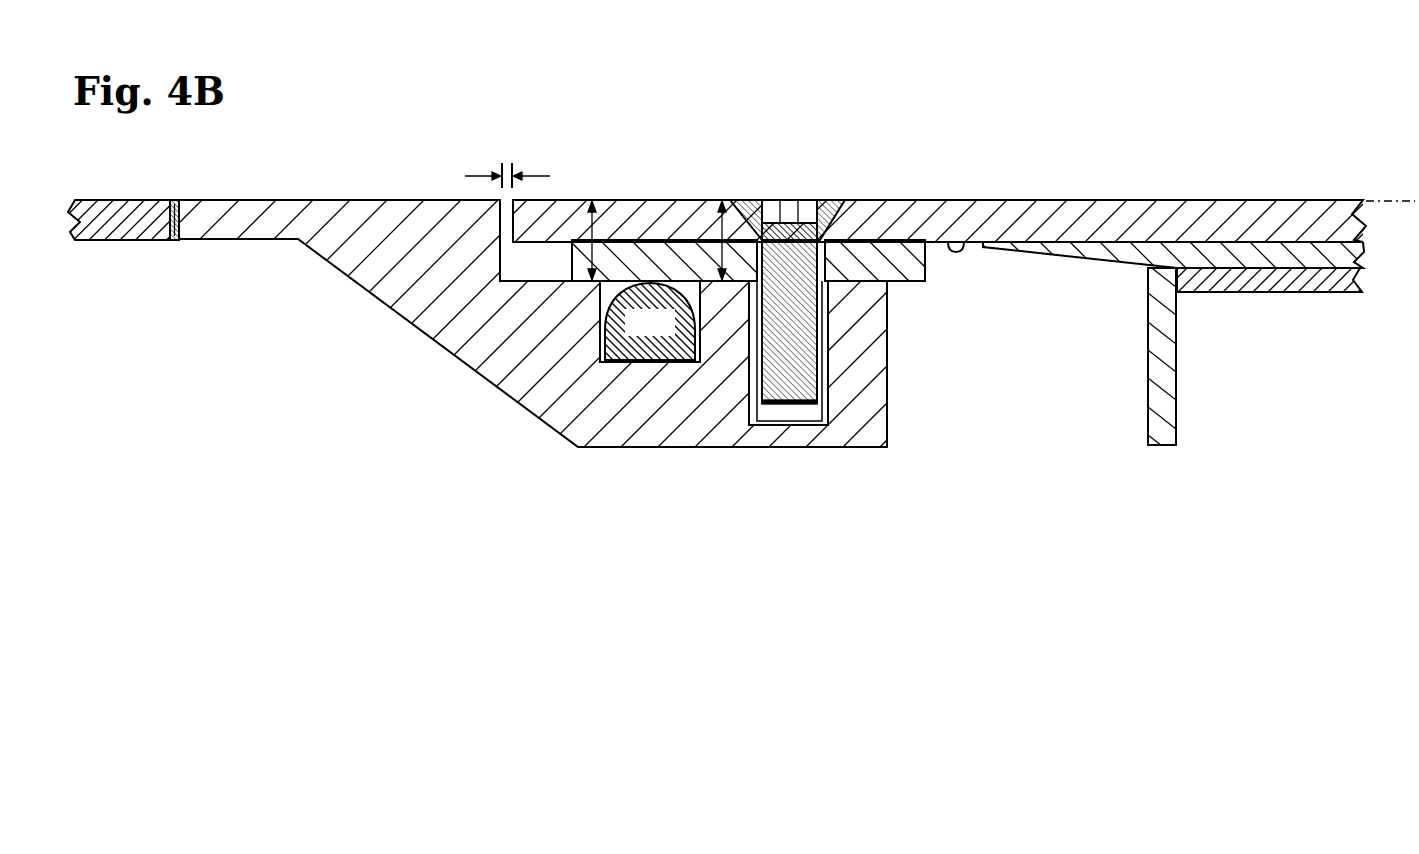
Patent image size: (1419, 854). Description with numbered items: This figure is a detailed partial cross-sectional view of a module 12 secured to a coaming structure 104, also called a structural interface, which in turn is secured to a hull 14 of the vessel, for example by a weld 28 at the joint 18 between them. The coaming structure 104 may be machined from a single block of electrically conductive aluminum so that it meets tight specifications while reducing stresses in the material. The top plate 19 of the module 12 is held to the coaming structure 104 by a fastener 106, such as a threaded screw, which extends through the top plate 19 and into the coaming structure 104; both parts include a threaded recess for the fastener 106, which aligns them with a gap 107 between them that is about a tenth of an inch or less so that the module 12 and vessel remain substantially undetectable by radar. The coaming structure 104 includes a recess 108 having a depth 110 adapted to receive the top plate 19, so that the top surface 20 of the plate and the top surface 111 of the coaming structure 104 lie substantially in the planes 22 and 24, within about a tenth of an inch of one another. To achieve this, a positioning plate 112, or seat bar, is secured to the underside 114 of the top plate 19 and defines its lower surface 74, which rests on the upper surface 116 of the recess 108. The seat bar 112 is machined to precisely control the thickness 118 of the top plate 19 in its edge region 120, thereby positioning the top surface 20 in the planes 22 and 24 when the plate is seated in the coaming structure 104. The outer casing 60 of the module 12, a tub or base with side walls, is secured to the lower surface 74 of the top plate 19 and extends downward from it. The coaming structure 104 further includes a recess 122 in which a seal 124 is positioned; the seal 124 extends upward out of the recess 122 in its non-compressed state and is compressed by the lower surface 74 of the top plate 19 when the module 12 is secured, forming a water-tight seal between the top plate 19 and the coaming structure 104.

The module 12 is at (1167, 210).
The hull 14 is at (96, 201).
The seal 18 is at (147, 201).
The top plate 19 is at (1045, 208).
The top surface 20 is at (897, 202).
The plane 22 is at (1375, 200).
The plane 24 is at (1410, 207).
The weld 28 is at (179, 218).
The outer casing 60 is at (1168, 342).
The lower surface 74 is at (872, 272).
The coaming structure 104 is at (403, 212).
The fastener 106 is at (808, 205).
The gap 107 is at (534, 172).
The recess 108 is at (508, 279).
The depth 110 is at (595, 227).
The top surface 111 is at (293, 200).
The positioning plate 112 is at (925, 258).
The underside 114 is at (963, 248).
The upper surface 116 is at (885, 285).
The thickness 118 is at (718, 225).
The edge region 120 is at (693, 113).
The recess 122 is at (693, 292).
The seal 124 is at (646, 321).